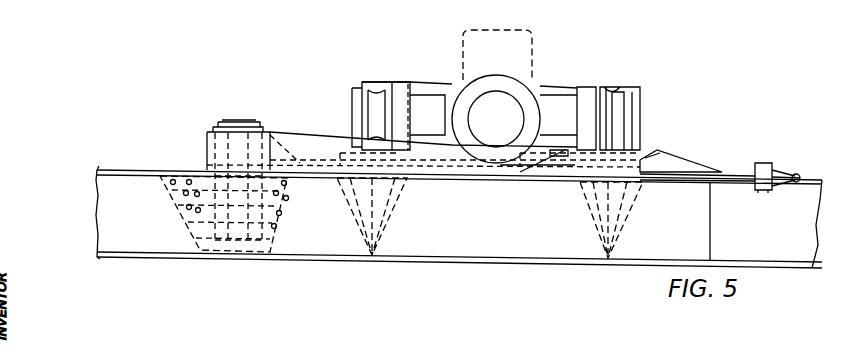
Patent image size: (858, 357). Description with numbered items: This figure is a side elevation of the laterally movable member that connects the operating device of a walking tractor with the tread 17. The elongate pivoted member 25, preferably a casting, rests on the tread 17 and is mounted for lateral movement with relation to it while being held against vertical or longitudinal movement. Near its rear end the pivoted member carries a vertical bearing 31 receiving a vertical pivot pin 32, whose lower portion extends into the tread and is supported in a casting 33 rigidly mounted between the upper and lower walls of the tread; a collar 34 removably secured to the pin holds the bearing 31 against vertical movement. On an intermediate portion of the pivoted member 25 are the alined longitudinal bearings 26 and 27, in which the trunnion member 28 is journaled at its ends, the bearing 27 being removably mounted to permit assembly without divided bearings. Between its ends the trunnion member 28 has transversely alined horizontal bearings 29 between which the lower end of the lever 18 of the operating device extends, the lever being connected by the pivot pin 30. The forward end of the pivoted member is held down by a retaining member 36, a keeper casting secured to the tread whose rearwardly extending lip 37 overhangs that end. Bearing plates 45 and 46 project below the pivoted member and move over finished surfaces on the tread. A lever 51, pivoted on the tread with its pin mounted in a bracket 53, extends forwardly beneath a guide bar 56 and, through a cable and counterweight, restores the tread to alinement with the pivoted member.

The tread 17 is at (497, 247).
The lever 18 is at (527, 40).
The pivoted member 25 is at (327, 160).
The bearing 26 is at (378, 83).
The bearing 27 is at (613, 90).
The trunnion member 28 is at (563, 88).
The horizontal bearings 29 is at (466, 90).
The pivot pin 30 is at (487, 130).
The vertical bearing 31 is at (207, 157).
The vertical pivot pin 32 is at (243, 123).
The casting 33 is at (190, 213).
The collar 34 is at (213, 132).
The retaining member 36 is at (672, 157).
The lip 37 is at (657, 155).
The bearing plate 45 is at (642, 188).
The bearing plate 46 is at (403, 180).
The lever 51 is at (733, 172).
The bracket 53 is at (567, 157).
The guide bar 56 is at (763, 164).